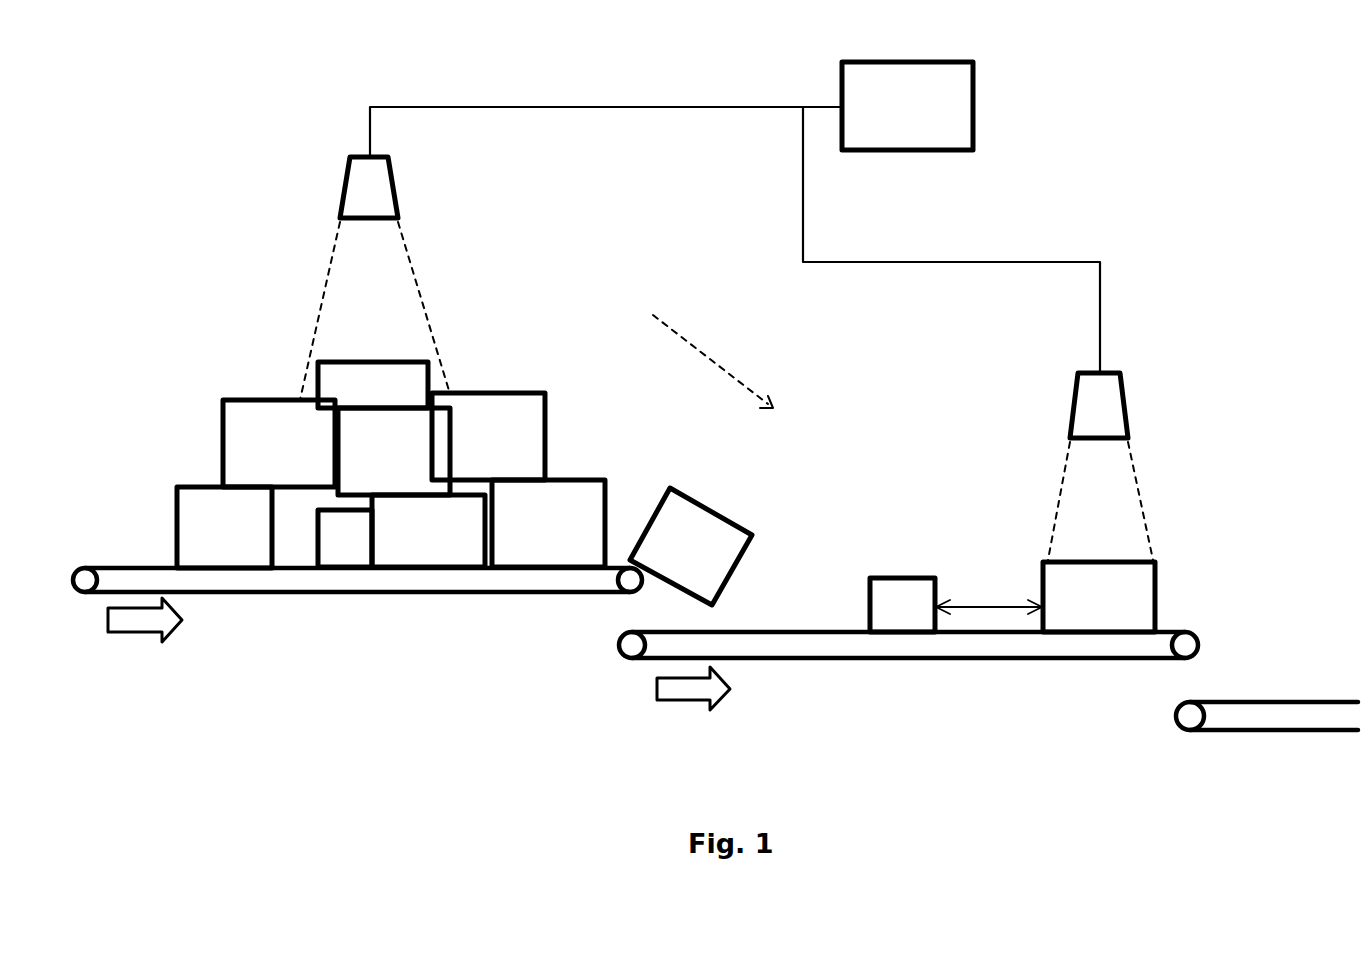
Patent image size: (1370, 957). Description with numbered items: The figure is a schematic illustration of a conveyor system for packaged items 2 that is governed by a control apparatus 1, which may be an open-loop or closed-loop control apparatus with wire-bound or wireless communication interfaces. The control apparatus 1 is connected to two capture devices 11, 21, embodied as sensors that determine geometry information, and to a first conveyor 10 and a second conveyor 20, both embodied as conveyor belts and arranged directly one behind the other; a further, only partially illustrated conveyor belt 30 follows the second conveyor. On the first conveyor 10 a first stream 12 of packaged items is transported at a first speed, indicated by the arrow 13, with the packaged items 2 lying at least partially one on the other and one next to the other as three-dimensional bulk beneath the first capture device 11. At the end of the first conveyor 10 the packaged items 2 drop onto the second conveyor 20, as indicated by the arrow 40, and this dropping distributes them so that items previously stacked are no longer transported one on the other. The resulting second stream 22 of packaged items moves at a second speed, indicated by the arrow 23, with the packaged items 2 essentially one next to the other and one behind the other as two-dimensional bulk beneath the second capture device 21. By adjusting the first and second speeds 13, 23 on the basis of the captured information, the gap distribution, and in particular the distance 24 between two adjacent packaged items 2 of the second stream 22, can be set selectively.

The control apparatus 1 is at (975, 100).
The packaged items 2 is at (222, 440).
The first conveyor 10 is at (330, 595).
The capture device 11 is at (346, 178).
The first stream of packaged items 12 is at (210, 377).
The arrow indicating first speed 13 is at (130, 635).
The second conveyor 20 is at (913, 660).
The capture device 21 is at (1123, 393).
The second stream of packaged items 22 is at (1193, 529).
The arrow indicating second speed 23 is at (657, 703).
The distance 24 is at (975, 604).
The conveyor belt 30 is at (1280, 733).
The arrow indicating dropping 40 is at (720, 362).